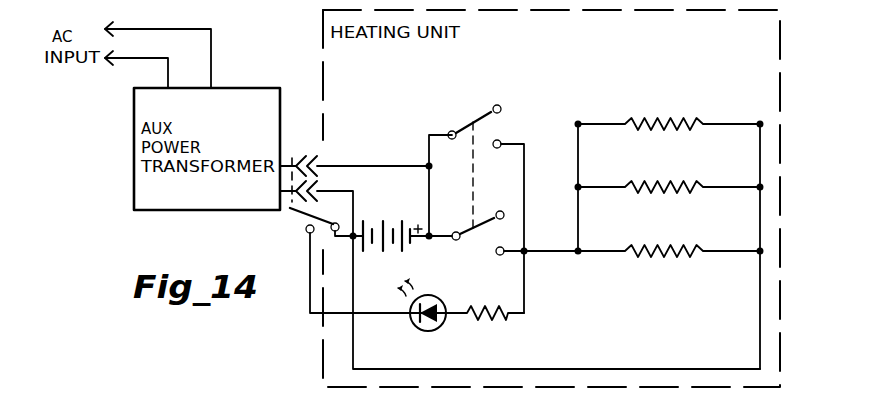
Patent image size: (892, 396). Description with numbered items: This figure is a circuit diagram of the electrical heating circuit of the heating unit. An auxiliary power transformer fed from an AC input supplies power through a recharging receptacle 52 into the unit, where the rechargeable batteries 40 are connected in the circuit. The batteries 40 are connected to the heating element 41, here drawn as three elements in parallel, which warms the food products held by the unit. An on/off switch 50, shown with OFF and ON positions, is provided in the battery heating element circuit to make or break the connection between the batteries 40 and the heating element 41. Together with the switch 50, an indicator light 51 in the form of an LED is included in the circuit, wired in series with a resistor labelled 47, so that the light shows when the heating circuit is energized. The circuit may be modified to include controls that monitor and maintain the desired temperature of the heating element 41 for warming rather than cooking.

The rechargeable batteries 40 is at (397, 187).
The heating element 41 is at (740, 111).
The screws 47 is at (511, 343).
The on/off switch 50 is at (478, 111).
The indicator light 51 is at (466, 280).
The recharging receptacle 52 is at (295, 152).